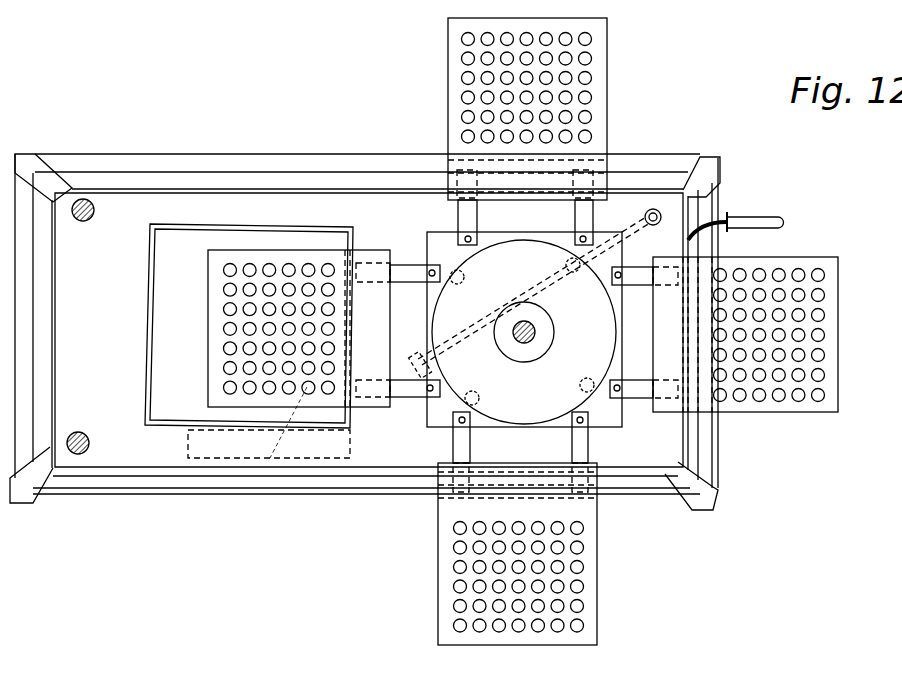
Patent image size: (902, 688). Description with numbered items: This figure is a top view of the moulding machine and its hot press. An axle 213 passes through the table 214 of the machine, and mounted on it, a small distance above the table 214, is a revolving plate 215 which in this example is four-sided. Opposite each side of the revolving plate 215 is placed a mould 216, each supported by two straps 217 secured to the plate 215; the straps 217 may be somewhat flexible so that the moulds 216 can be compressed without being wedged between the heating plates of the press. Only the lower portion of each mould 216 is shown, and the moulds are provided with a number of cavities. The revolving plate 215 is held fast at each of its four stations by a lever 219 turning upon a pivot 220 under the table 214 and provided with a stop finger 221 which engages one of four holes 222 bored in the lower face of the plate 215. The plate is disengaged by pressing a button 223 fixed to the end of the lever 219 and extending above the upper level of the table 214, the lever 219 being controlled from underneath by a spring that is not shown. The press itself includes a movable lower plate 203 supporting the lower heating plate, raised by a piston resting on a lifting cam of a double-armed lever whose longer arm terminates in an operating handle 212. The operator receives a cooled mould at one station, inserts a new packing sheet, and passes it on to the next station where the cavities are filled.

The movable lower plate 203 is at (145, 355).
The operating handle 212 is at (758, 218).
The axle 213 is at (533, 327).
The table 214 is at (127, 455).
The revolving plate 215 is at (602, 425).
The mould 216 is at (607, 142).
The straps 217 is at (630, 268).
The lever 219 is at (460, 345).
The pivot 220 is at (417, 356).
The stop finger 221 is at (566, 265).
The holes 222 is at (464, 277).
The button 223 is at (645, 216).